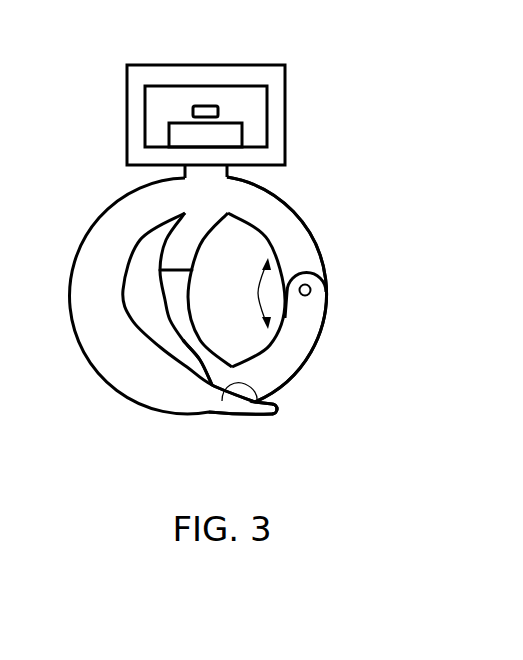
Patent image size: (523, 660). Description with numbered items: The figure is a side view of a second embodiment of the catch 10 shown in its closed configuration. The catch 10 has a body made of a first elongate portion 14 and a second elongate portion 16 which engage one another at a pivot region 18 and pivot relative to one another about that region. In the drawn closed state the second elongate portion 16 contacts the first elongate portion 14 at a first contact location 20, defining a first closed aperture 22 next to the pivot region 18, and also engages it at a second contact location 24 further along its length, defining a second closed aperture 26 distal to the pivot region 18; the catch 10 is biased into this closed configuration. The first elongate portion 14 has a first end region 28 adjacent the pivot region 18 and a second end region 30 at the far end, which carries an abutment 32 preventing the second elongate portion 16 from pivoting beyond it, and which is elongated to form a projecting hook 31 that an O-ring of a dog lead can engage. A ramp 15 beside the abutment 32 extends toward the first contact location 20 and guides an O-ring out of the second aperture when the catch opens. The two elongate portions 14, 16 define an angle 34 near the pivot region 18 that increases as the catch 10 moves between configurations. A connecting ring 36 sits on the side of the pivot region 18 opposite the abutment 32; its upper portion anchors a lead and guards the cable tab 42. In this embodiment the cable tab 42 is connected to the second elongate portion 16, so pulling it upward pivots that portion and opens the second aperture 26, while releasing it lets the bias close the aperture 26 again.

The catch 10 is at (367, 176).
The first elongate portion 14 is at (121, 353).
The ramp 15 is at (178, 353).
The second elongate portion 16 is at (292, 352).
The pivot region 18 is at (312, 292).
The first contact location 20 is at (178, 274).
The first closed aperture 22 is at (238, 263).
The second contact location 24 is at (265, 412).
The second closed aperture 26 is at (150, 327).
The first end region 28 is at (312, 266).
The second end region 30 is at (218, 405).
The projecting hook 31 is at (273, 398).
The abutment 32 is at (218, 390).
The angle 34 is at (257, 297).
The connecting ring 36 is at (263, 65).
The cable tab 42 is at (220, 113).